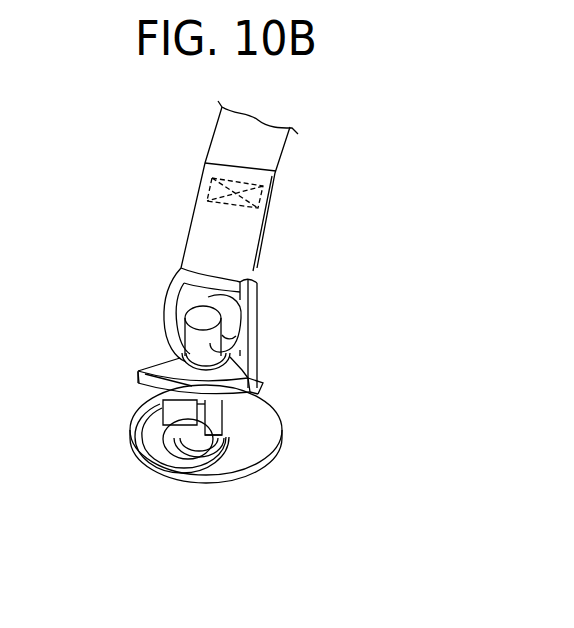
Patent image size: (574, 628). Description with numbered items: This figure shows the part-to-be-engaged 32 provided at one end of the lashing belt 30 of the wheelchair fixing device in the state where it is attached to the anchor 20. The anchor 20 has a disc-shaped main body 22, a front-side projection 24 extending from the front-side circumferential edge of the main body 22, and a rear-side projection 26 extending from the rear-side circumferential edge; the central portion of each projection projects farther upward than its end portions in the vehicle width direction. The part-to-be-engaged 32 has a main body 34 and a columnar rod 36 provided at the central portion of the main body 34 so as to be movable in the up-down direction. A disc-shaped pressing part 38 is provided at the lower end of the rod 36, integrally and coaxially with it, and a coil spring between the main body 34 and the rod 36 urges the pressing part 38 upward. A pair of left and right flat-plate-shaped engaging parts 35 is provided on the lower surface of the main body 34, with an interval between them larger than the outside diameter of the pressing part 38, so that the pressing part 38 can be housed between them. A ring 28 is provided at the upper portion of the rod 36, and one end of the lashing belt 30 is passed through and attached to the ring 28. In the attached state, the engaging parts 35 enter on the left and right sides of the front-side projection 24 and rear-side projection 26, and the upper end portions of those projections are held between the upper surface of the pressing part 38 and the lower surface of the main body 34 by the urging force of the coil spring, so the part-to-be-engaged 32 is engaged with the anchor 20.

The anchor 20 is at (283, 413).
The main body 22 is at (152, 462).
The front-side projection 24 is at (133, 397).
The rear-side projection 26 is at (224, 404).
The ring 28 is at (177, 293).
The lashing belt 30 is at (277, 153).
The part-to-be-engaged 32 is at (251, 352).
The main body 34 is at (174, 358).
The engaging parts 35 is at (262, 378).
The rod 36 is at (204, 316).
The pressing part 38 is at (225, 445).